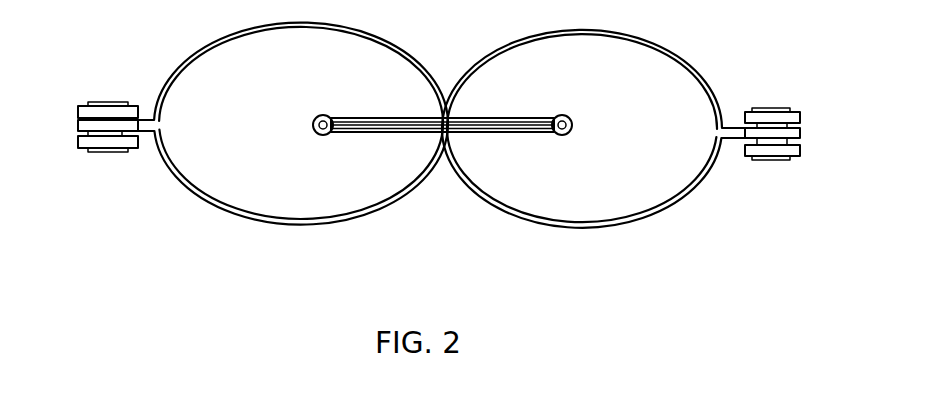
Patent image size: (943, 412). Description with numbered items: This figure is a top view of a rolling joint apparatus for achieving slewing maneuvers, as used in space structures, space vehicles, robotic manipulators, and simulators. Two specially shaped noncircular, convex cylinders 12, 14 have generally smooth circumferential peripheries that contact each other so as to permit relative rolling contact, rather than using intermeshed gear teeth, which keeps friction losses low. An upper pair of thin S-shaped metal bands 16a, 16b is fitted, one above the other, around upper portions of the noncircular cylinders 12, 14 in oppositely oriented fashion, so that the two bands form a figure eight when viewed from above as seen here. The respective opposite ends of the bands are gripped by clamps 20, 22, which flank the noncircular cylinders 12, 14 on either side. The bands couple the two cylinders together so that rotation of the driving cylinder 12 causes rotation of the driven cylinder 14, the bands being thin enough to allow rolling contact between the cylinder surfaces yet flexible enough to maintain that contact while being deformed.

The noncircular cylinder 12 is at (293, 154).
The noncircular cylinder 14 is at (596, 160).
The band 16a is at (247, 213).
The band 16b is at (583, 228).
The clamp 20 is at (135, 107).
The clamp 22 is at (800, 146).